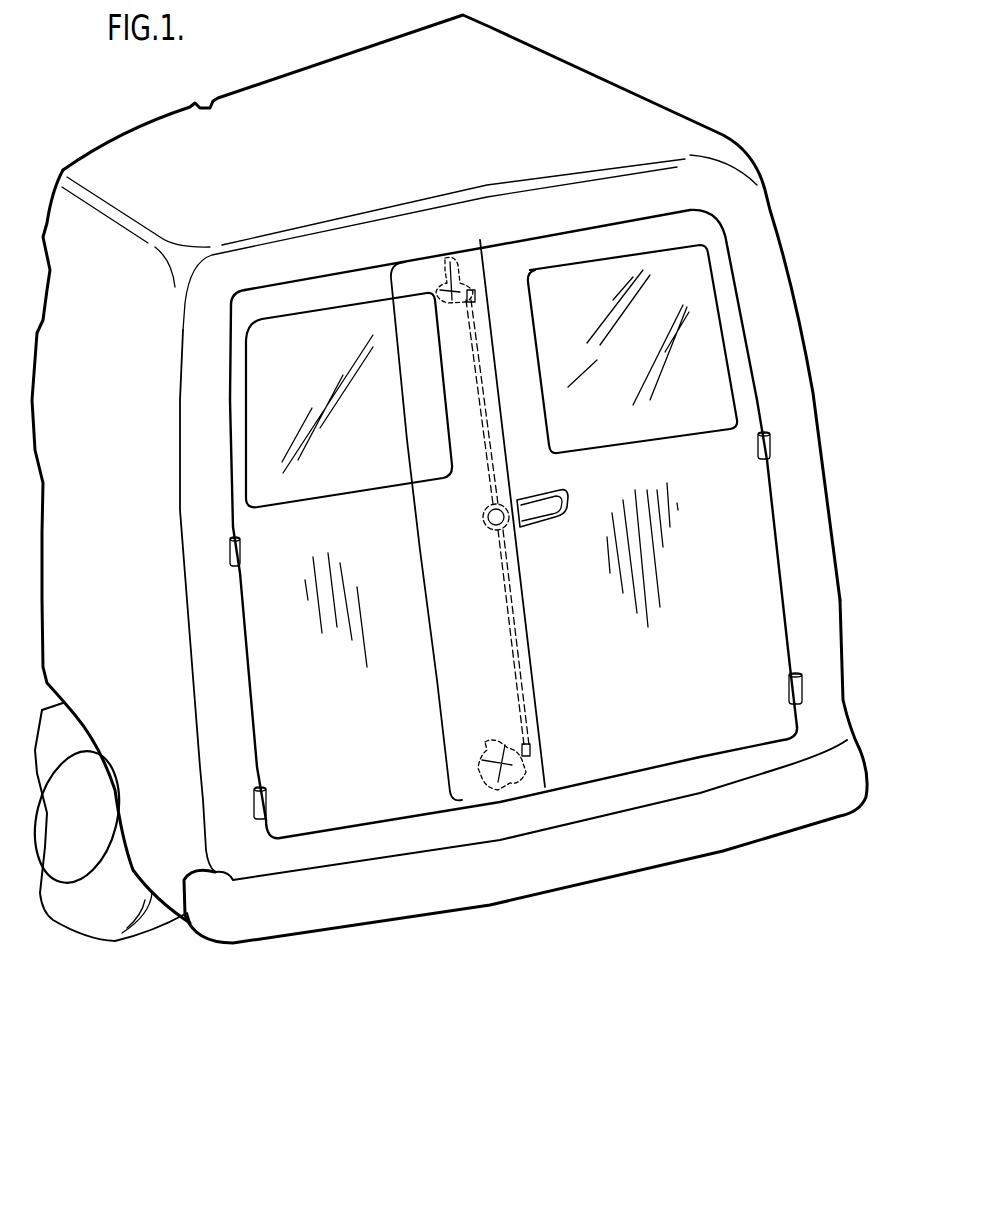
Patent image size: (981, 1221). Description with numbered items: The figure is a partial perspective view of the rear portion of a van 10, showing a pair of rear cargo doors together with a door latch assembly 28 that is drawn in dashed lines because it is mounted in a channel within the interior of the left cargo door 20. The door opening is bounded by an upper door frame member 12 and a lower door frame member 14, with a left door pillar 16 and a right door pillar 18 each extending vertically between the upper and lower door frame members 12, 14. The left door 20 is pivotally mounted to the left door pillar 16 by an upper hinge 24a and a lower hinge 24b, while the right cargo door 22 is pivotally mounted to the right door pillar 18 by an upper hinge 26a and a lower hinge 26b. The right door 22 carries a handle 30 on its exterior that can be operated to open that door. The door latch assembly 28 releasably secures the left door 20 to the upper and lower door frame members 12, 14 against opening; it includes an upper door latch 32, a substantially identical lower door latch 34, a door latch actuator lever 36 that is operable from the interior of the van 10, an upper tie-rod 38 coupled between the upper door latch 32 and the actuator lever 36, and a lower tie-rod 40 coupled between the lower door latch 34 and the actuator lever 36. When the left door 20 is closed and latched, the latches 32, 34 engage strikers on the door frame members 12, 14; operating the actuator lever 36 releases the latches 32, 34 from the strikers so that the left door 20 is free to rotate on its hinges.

The van 10 is at (542, 956).
The upper door frame member 12 is at (550, 222).
The lower door frame member 14 is at (655, 804).
The left door pillar 16 is at (218, 630).
The right door pillar 18 is at (805, 507).
The left cargo door 20 is at (348, 747).
The right cargo door 22 is at (680, 717).
The upper hinge 24a is at (232, 538).
The lower hinge 24b is at (253, 790).
The upper hinge 26a is at (770, 440).
The lower hinge 26b is at (802, 684).
The door latch assembly 28 is at (418, 540).
The handle 30 is at (535, 528).
The upper door latch 32 is at (436, 295).
The lower door latch 34 is at (482, 733).
The door latch actuator lever 36 is at (483, 507).
The upper tie-rod 38 is at (478, 375).
The lower tie-rod 40 is at (500, 567).